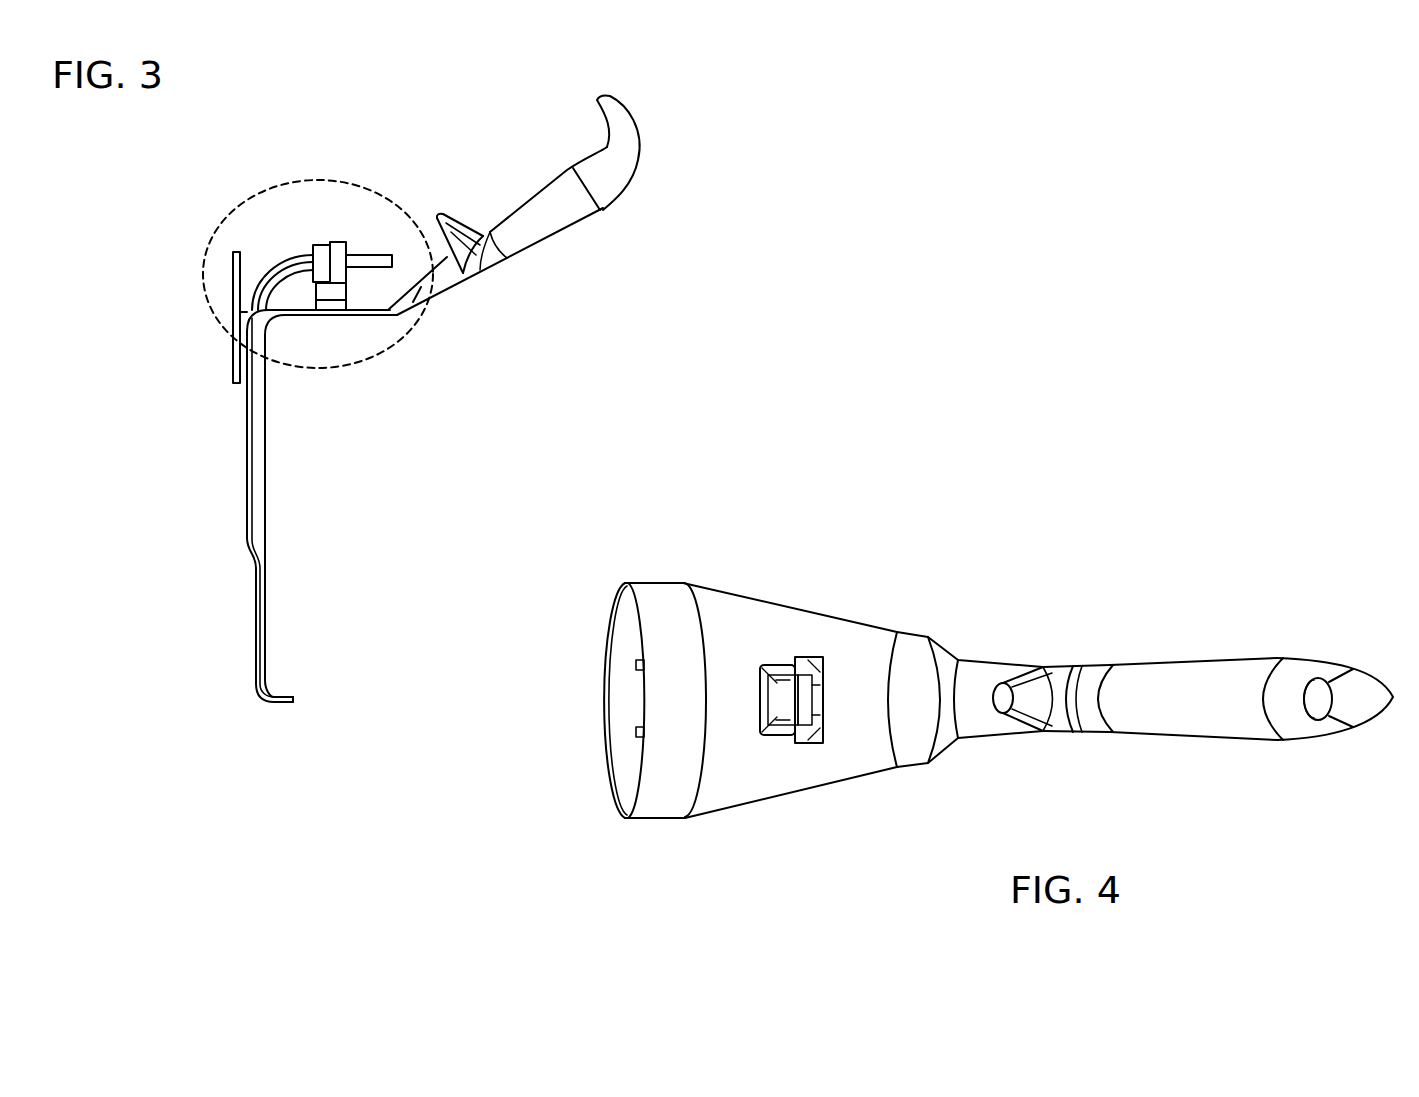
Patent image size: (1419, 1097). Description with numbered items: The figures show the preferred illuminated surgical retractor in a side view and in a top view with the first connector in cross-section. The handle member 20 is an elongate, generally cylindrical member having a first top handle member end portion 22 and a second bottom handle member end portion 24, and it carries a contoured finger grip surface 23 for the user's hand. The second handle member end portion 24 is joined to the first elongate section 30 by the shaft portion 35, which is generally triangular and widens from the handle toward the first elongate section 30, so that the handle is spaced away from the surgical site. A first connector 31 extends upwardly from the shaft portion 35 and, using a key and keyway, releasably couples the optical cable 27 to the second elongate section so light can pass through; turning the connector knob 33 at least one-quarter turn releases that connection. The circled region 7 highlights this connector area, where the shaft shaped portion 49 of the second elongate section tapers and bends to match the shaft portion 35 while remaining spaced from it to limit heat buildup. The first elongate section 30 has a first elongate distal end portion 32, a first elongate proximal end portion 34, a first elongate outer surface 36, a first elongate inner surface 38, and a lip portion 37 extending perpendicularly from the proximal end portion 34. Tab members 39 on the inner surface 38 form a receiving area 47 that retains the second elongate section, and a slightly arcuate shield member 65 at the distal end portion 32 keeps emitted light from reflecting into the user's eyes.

In FIG. 3, the detail area of attachment region 7 is at (212, 240).
In FIG. 3, the handle member 20 is at (583, 215).
In FIG. 4, the handle member 20 is at (1128, 662).
In FIG. 3, the first top handle member end portion 22 is at (632, 160).
In FIG. 4, the first top handle member end portion 22 is at (1215, 672).
In FIG. 3, the finger grip surface 23 is at (445, 218).
In FIG. 4, the finger grip surface 23 is at (1022, 697).
In FIG. 3, the second bottom handle member end portion 24 is at (450, 280).
In FIG. 4, the second bottom handle member end portion 24 is at (978, 728).
In FIG. 3, the optical cable 27 is at (360, 245).
In FIG. 3, the first elongate section 30 is at (248, 522).
In FIG. 3, the first connector 31 is at (347, 293).
In FIG. 4, the first connector 31 is at (803, 667).
In FIG. 3, the first elongate distal end portion 32 is at (260, 437).
In FIG. 4, the connector knob 33 is at (767, 672).
In FIG. 3, the first elongate proximal end portion 34 is at (268, 650).
In FIG. 3, the shaft portion 35 is at (385, 320).
In FIG. 4, the shaft portion 35 is at (720, 785).
In FIG. 3, the first elongate outer surface 36 is at (268, 556).
In FIG. 3, the lip portion 37 is at (292, 703).
In FIG. 3, the first elongate inner surface 38 is at (252, 620).
In FIG. 4, the first elongate inner surface 38 is at (637, 612).
In FIG. 4, the tab members 39 is at (636, 665).
In FIG. 4, the receiving area 47 is at (638, 696).
In FIG. 3, the shaft shaped portion 49 is at (280, 290).
In FIG. 3, the shield member 65 is at (235, 360).
In FIG. 4, the shield member 65 is at (602, 650).